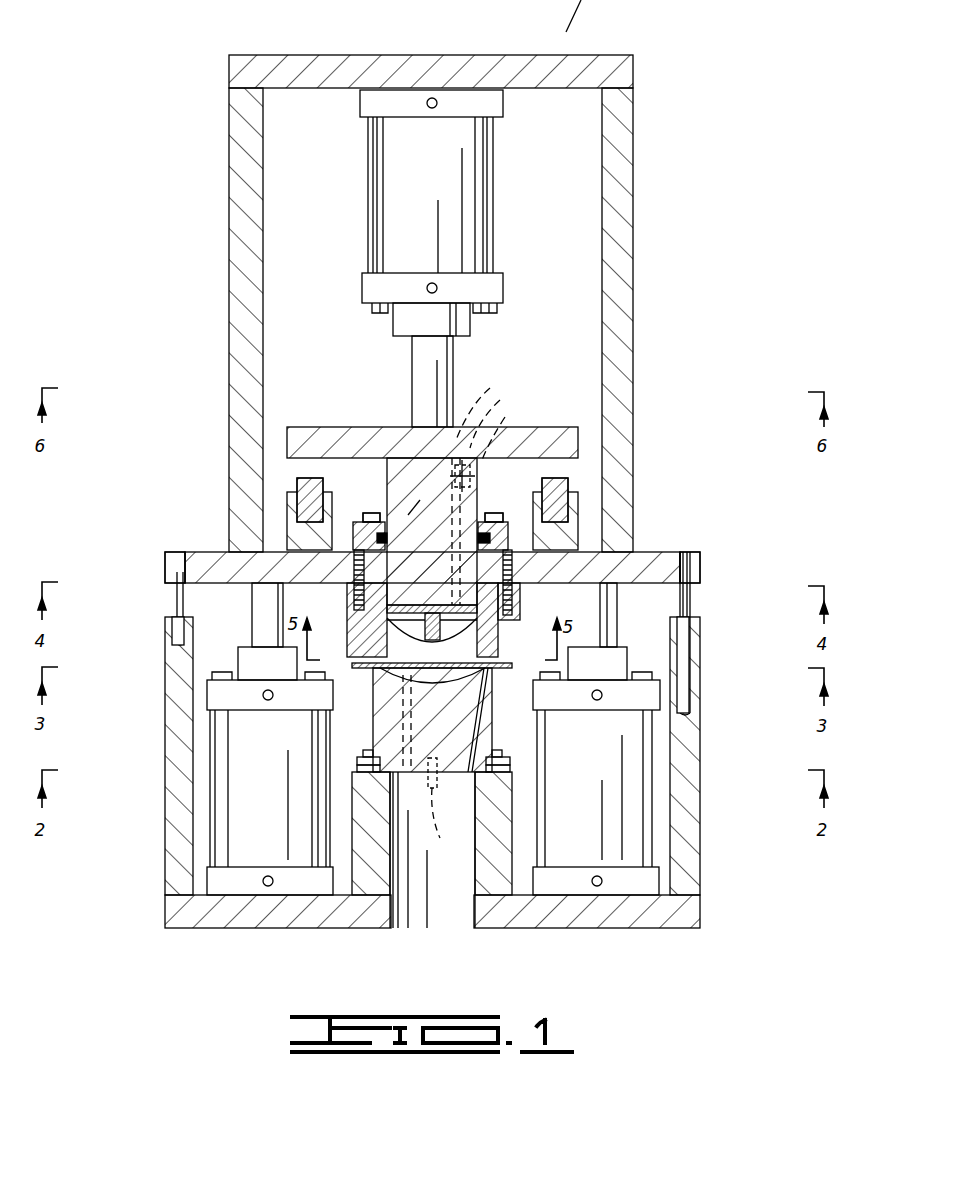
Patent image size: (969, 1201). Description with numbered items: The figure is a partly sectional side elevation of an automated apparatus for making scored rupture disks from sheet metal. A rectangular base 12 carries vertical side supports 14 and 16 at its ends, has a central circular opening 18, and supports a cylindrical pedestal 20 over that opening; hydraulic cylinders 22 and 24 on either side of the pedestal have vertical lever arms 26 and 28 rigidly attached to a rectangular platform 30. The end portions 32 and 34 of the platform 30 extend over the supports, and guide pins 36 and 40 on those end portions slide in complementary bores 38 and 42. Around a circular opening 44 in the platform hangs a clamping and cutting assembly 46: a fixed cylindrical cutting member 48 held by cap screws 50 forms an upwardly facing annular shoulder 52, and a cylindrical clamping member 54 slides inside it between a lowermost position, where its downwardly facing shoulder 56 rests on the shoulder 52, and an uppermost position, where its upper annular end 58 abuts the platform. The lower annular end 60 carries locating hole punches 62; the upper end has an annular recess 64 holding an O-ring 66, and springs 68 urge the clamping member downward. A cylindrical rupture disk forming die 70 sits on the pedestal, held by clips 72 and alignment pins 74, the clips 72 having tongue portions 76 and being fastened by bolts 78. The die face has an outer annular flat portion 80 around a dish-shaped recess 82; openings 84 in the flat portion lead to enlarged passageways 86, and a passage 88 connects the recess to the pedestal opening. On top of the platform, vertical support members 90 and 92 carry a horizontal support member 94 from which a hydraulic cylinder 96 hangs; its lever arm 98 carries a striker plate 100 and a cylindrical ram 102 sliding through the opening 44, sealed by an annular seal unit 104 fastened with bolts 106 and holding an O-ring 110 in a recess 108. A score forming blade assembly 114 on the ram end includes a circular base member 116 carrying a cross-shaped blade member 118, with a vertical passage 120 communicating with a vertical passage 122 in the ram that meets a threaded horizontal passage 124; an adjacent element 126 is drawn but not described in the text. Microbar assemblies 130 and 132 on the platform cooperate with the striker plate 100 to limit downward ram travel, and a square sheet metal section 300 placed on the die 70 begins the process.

The base 12 is at (372, 900).
The side support 14 is at (178, 858).
The side support 16 is at (688, 863).
The opening 18 is at (455, 905).
The pedestal 20 is at (520, 900).
The hydraulic cylinder 22 is at (240, 885).
The hydraulic cylinder 24 is at (633, 885).
The lever arm 26 is at (258, 622).
The lever arm 28 is at (662, 660).
The platform 30 is at (703, 572).
The end portion 32 is at (165, 558).
The end portion 34 is at (700, 557).
The guide pins 36 is at (177, 592).
The bores 38 is at (178, 677).
The guide pins 40 is at (690, 585).
The bores 42 is at (700, 690).
The opening 44 is at (512, 545).
The clamping and cutting assembly 46 is at (560, 608).
The cutting member 48 is at (347, 601).
The cap screws 50 is at (362, 530).
The annular shoulder 52 is at (360, 630).
The clamping member 54 is at (590, 642).
The annular shoulder 56 is at (510, 633).
The upper annular end 58 is at (352, 580).
The lower annular end 60 is at (372, 662).
The locating hole punches 62 is at (375, 672).
The annular recess 64 is at (405, 590).
The O-ring 66 is at (398, 568).
The springs 68 is at (514, 600).
The rupture disk forming die 70 is at (490, 712).
The clips 72 is at (362, 762).
The alignment pins 74 is at (441, 836).
The tongue portions 76 is at (505, 755).
The bolts 78 is at (370, 755).
The annular flat portion 80 is at (388, 668).
The dish-shaped recess 82 is at (430, 680).
The openings 84 is at (455, 680).
The passageways 86 is at (484, 708).
The passage 88 is at (412, 745).
The support member 90 is at (242, 255).
The support member 92 is at (618, 240).
The support member 94 is at (340, 68).
The hydraulic cylinder 96 is at (493, 177).
The lever arm 98 is at (430, 376).
The striker plate 100 is at (477, 405).
The ram 102 is at (402, 462).
The seal unit 104 is at (580, 498).
The bolts 106 is at (372, 513).
The annular recess 108 is at (396, 512).
The O-ring 110 is at (424, 503).
The score forming blade assembly 114 is at (352, 618).
The base member 116 is at (420, 612).
The blade member 118 is at (520, 618).
The vertical passage 120 is at (455, 575).
The vertical passage 122 is at (480, 478).
The horizontal passage 124 is at (490, 404).
The passage 126 is at (496, 421).
The microbar assembly 130 is at (283, 500).
The microbar assembly 132 is at (582, 506).
The sheet metal section 300 is at (525, 664).